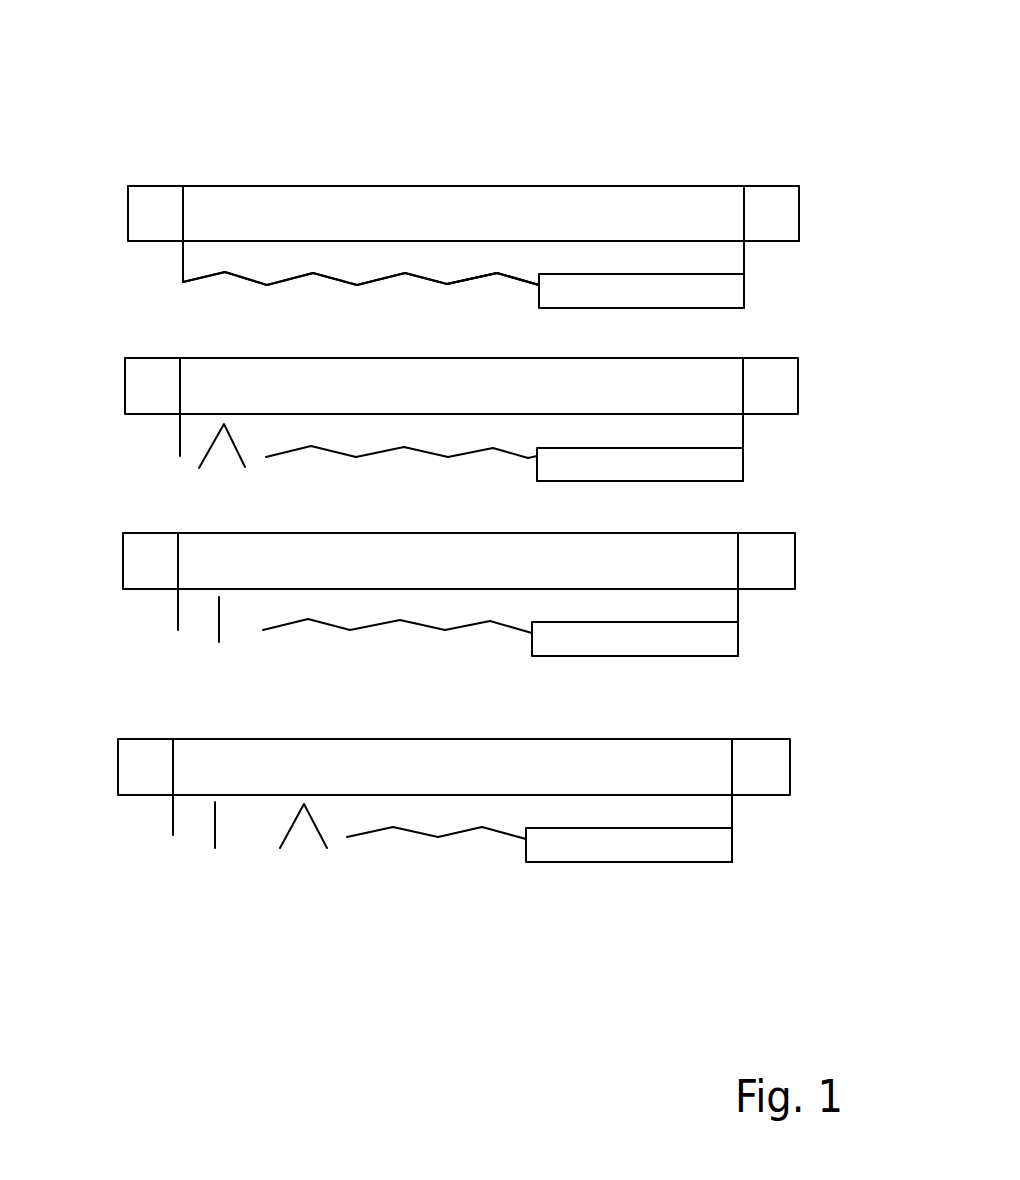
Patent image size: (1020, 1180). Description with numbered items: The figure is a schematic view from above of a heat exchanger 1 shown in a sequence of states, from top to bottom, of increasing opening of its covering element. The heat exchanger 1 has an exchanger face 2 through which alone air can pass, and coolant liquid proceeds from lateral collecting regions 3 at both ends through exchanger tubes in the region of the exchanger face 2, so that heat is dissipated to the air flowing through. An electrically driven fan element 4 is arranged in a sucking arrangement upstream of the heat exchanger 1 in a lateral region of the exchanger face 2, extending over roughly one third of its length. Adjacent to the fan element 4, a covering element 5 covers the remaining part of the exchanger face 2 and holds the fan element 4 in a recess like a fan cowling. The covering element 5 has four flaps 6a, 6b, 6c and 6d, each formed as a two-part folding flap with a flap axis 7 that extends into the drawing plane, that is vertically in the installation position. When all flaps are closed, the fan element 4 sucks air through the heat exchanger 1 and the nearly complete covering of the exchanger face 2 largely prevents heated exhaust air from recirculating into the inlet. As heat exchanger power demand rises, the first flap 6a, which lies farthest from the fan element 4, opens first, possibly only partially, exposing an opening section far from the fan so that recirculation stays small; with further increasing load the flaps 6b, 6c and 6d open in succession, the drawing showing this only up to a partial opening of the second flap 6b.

The heat exchanger 1 is at (165, 120).
The exchanger face 2 is at (590, 238).
The lateral collecting regions 3 is at (137, 207).
The fan element 4 is at (670, 303).
The covering element 5 is at (218, 297).
The first flap 6a is at (242, 262).
The second flap 6b is at (340, 262).
The third flap 6c is at (435, 257).
The fourth flap 6d is at (503, 248).
The flap axis 7 is at (497, 277).